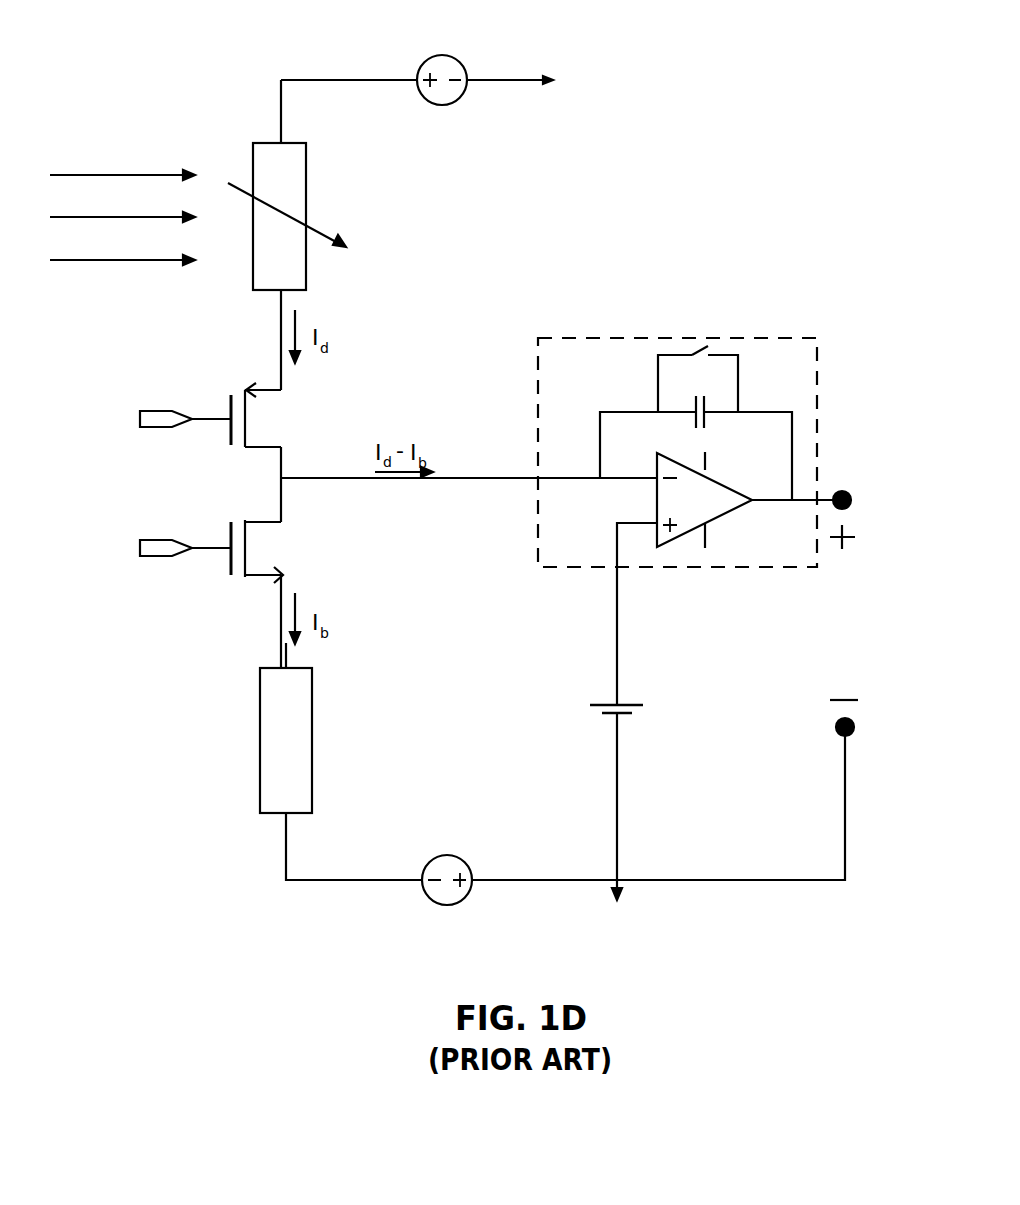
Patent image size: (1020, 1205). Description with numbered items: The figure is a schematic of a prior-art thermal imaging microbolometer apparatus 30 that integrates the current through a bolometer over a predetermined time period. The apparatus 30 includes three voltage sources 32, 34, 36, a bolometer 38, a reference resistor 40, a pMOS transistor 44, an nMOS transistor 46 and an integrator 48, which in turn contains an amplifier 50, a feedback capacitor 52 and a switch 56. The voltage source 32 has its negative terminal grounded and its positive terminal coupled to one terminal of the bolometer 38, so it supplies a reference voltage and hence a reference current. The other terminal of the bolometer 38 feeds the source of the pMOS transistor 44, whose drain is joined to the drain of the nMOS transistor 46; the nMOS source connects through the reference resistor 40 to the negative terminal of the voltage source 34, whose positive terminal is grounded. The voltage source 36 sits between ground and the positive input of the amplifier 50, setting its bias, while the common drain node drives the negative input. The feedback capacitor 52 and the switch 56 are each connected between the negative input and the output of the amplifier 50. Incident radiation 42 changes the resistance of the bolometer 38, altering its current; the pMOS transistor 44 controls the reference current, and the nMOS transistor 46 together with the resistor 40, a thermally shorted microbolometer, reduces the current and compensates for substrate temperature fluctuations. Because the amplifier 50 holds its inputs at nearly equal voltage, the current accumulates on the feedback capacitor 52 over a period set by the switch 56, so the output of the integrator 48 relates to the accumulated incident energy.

The thermal imaging microbolometer apparatus 30 is at (298, 918).
The voltage source 32 is at (446, 55).
The voltage source 34 is at (447, 905).
The voltage source 36 is at (598, 703).
The bolometer 38 is at (310, 143).
The reference resistor 40 is at (258, 688).
The incident radiation 42 is at (92, 262).
The pMOS transistor 44 is at (265, 390).
The nMOS transistor 46 is at (268, 520).
The integrator 48 is at (815, 336).
The amplifier 50 is at (718, 478).
The feedback capacitor 52 is at (670, 410).
The switch 56 is at (735, 352).